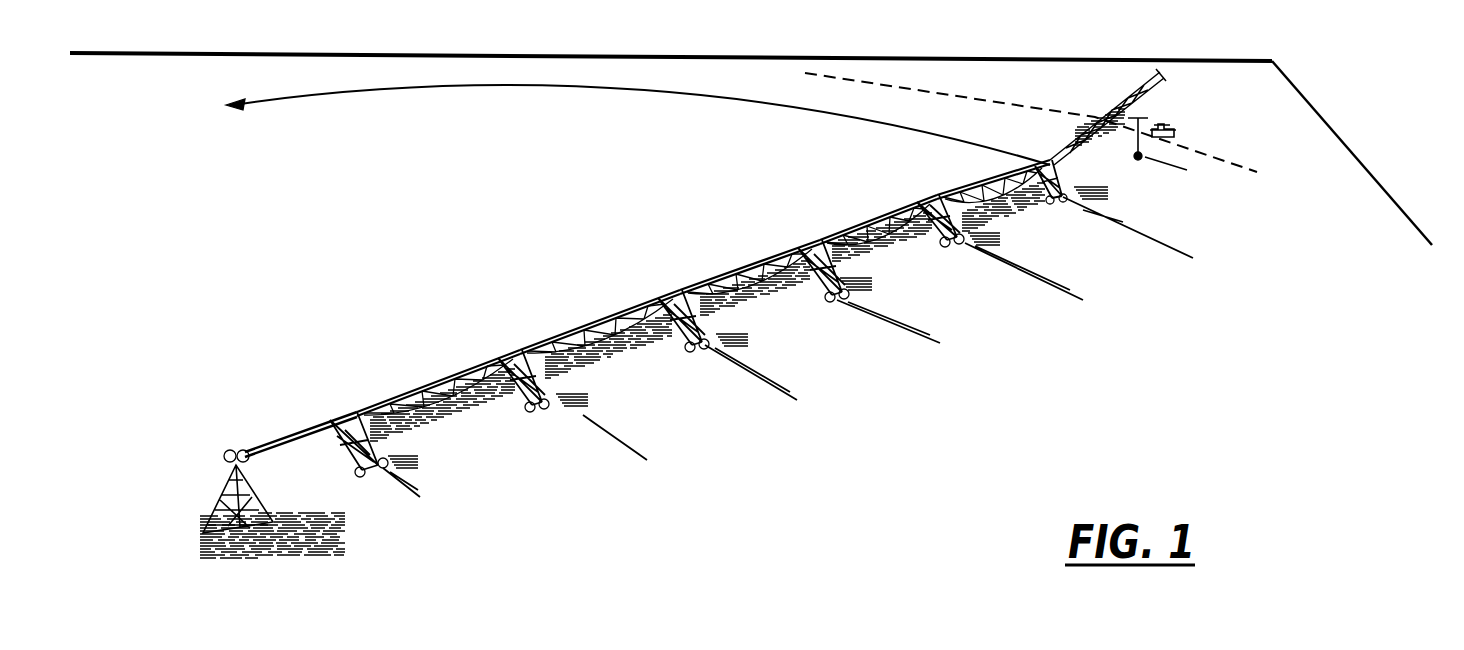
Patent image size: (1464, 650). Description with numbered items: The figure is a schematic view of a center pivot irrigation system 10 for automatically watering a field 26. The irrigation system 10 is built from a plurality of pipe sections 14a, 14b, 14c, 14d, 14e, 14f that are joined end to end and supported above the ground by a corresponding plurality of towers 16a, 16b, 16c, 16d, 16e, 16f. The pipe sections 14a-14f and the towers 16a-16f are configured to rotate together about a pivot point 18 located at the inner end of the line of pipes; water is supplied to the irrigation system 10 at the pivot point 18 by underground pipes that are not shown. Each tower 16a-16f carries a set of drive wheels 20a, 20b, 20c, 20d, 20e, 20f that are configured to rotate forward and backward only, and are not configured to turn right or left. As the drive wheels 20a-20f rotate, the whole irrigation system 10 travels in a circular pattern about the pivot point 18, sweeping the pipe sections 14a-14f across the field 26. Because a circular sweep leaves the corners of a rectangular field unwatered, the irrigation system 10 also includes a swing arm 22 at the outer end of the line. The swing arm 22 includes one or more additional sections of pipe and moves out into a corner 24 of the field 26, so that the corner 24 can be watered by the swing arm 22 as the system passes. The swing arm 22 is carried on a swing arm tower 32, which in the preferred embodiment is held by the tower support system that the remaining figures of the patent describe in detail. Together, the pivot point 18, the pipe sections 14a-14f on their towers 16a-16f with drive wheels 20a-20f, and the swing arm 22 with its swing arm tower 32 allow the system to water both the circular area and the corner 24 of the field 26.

The center pivot irrigation system 10 is at (742, 483).
The pipe section 14a is at (262, 437).
The pipe section 14b is at (398, 380).
The pipe section 14c is at (570, 323).
The pipe section 14d is at (710, 272).
The pipe section 14e is at (872, 214).
The pipe section 14f is at (963, 184).
The tower 16a is at (358, 474).
The tower 16b is at (522, 393).
The tower 16c is at (675, 347).
The tower 16d is at (838, 296).
The tower 16e is at (937, 242).
The tower 16f is at (1047, 203).
The pivot point 18 is at (232, 450).
The drive wheels 20a is at (385, 462).
The drive wheels 20b is at (557, 394).
The drive wheels 20c is at (707, 332).
The drive wheels 20d is at (832, 284).
The drive wheels 20e is at (967, 229).
The drive wheels 20f is at (1073, 190).
The swing arm 22 is at (1077, 120).
The corner 24 is at (1273, 118).
The field 26 is at (510, 193).
The swing arm tower 32 is at (1113, 114).